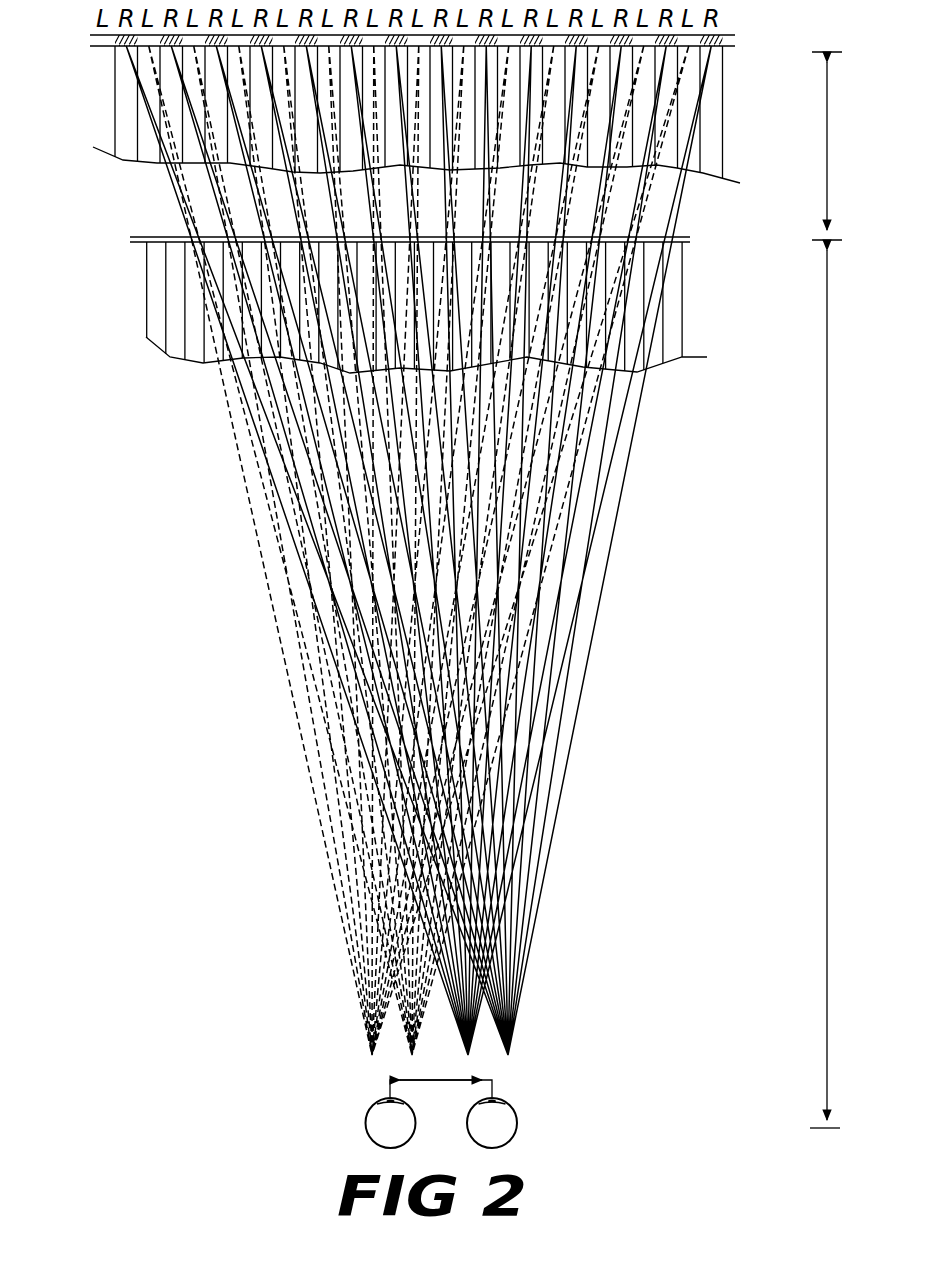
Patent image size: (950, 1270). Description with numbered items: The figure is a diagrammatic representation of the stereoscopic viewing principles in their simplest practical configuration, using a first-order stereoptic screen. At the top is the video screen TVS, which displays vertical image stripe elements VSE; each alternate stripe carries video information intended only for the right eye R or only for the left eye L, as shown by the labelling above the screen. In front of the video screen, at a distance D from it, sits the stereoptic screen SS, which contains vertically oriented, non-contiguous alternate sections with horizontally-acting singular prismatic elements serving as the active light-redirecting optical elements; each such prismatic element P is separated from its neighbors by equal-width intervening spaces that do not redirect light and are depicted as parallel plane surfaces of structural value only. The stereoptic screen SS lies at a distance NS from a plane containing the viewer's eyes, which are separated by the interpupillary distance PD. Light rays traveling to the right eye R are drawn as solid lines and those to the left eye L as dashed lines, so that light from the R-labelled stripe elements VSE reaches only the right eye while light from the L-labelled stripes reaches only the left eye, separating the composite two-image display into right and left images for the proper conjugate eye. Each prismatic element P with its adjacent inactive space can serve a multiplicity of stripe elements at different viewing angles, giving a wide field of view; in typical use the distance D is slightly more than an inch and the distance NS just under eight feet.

The video screen TVS is at (88, 42).
The vertical image stripe elements VSE is at (688, 115).
The stereoptic screen SS is at (125, 236).
The active light-redirecting optical element P is at (160, 333).
The distance between stereoptic screen and video screen D is at (831, 146).
The distance to viewer's eye plane NS is at (839, 689).
The interpupillary distance PD is at (441, 1074).
The left eye L is at (371, 1123).
The right eye R is at (513, 1123).